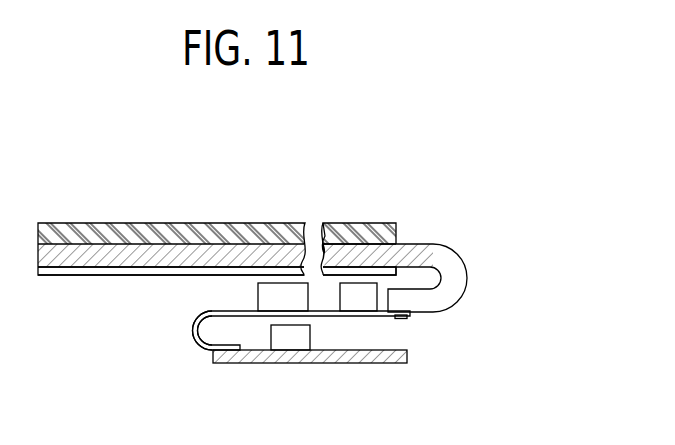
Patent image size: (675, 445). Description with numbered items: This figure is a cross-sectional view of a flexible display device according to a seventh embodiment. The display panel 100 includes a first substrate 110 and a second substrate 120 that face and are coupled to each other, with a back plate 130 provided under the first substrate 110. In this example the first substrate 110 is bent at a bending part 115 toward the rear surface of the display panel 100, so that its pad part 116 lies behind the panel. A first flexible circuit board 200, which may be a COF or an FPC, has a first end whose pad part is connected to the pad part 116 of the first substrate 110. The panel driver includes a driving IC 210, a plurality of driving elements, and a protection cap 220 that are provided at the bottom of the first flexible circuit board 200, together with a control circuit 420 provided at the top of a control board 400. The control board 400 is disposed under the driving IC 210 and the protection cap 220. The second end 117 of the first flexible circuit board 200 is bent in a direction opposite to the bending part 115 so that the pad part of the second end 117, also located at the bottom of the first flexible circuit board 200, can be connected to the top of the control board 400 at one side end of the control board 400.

The display panel 100 is at (222, 165).
The first substrate 110 is at (120, 253).
The second substrate 120 is at (168, 242).
The back plate 130 is at (213, 272).
The bending part 115 is at (468, 268).
The pad part 116 is at (401, 319).
The second end 117 is at (190, 328).
The first flexible circuit board 200 is at (237, 313).
The driving IC 210 is at (358, 296).
The protection cap 220 is at (280, 297).
The control board 400 is at (353, 355).
The control circuit 420 is at (288, 341).